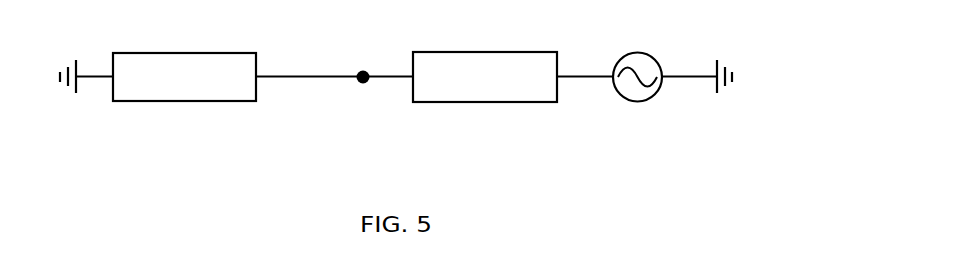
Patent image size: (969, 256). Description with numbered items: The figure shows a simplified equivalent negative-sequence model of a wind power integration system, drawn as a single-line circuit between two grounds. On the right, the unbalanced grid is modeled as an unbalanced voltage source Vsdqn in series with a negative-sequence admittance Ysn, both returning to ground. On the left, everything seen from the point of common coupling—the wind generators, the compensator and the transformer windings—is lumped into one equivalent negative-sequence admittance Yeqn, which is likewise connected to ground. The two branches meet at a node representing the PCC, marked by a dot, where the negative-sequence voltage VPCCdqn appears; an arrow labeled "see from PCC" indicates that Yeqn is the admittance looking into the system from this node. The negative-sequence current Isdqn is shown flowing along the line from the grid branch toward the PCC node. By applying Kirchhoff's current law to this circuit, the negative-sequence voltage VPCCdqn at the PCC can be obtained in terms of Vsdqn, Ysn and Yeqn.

The equivalent negative-sequence admittance Yeqn is at (184, 101).
The negative-sequence admittance of the grid Ysn is at (485, 53).
The unbalanced grid voltage Vsdqn is at (640, 74).
The negative-sequence grid current Isdqn is at (398, 52).
The negative-sequence voltage at PCC VPCCdqn is at (385, 141).